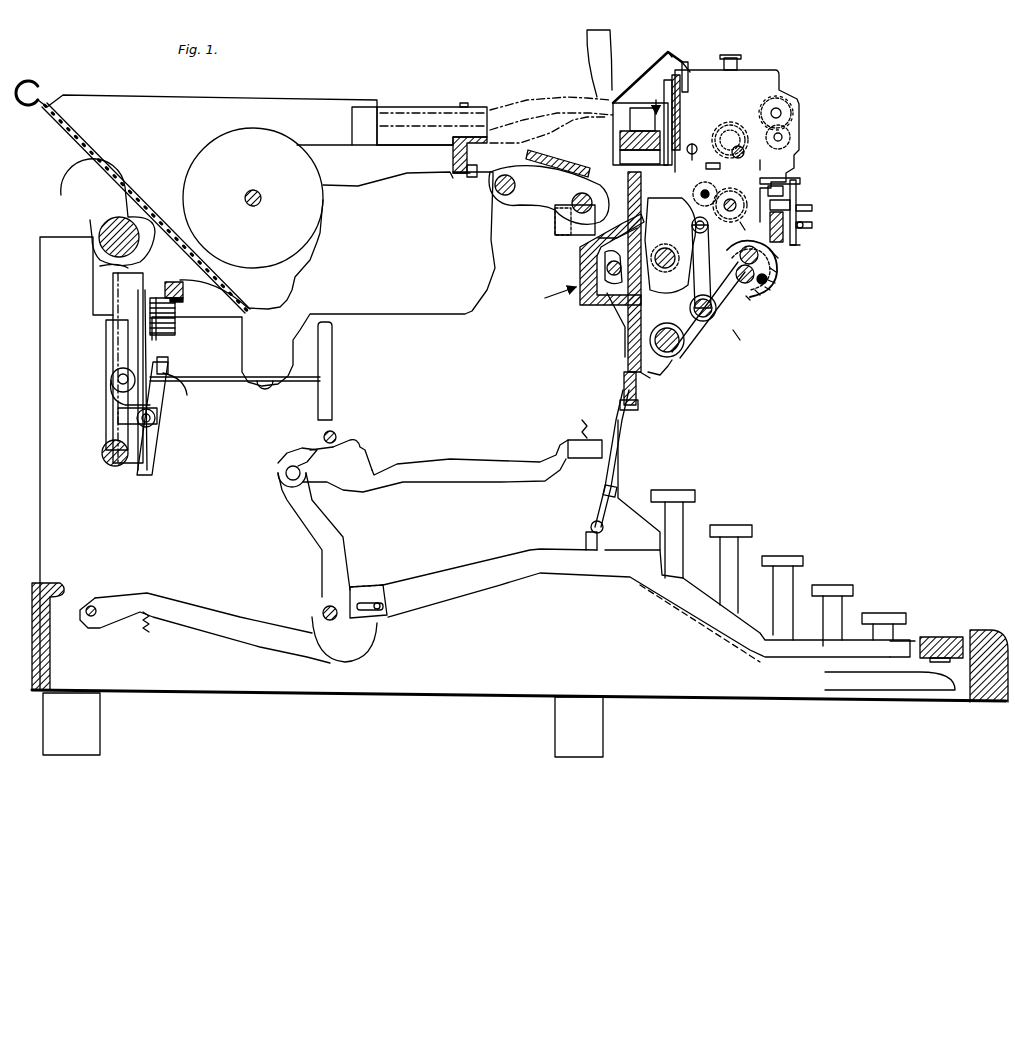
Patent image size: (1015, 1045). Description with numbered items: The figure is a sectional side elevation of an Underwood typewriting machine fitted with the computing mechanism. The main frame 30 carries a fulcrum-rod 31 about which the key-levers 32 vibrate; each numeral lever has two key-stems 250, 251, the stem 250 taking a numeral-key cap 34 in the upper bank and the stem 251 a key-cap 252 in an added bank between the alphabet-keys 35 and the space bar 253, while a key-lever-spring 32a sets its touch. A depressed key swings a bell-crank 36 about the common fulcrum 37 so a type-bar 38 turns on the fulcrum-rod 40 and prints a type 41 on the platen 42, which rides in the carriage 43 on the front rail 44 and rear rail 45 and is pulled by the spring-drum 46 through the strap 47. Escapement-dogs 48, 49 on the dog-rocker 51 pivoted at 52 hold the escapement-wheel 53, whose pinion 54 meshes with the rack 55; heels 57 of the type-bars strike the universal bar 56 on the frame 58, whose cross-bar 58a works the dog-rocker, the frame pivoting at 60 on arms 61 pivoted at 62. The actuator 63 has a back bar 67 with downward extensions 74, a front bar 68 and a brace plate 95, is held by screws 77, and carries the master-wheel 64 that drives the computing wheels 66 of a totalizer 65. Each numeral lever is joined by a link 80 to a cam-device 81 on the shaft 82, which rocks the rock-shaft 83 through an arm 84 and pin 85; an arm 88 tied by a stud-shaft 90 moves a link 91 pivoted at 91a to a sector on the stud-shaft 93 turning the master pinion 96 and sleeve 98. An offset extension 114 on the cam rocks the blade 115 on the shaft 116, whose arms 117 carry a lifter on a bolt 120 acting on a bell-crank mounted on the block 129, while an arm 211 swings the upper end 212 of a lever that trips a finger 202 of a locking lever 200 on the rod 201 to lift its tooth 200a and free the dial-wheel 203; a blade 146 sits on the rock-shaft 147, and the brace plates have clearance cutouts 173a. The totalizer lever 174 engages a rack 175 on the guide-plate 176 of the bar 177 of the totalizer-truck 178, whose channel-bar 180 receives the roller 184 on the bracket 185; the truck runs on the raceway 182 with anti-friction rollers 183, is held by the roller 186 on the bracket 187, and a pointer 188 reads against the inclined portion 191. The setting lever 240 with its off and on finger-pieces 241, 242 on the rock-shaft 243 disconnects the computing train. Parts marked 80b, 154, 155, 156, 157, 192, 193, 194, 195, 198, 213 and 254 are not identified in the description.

The main frame 30 is at (620, 481).
The fulcrum-rod 31 is at (90, 605).
The key-levers 32 is at (636, 605).
The key-lever-spring 32a is at (146, 633).
The numeral-keys 34 is at (683, 490).
The alphabet-keys 35 is at (770, 555).
The bell-cranks 36 is at (348, 546).
The common fulcrum 37 is at (322, 613).
The type-bars 38 is at (457, 459).
The common fulcrum-rod 40 is at (324, 437).
The types 41 is at (583, 424).
The platen 42 is at (253, 198).
The carriage 43 is at (318, 152).
The front rail 44 is at (497, 190).
The rear rail 45 is at (118, 220).
The spring-drum 46 is at (113, 332).
The strap 47 is at (112, 270).
The escapement-dog 48 is at (123, 372).
The escapement-dog 49 is at (169, 364).
The dog-rocker 51 is at (155, 441).
The pivot 52 is at (156, 418).
The escapement-wheel 53 is at (172, 283).
The pinion 54 is at (176, 329).
The rack 55 is at (183, 301).
The universal bar 56 is at (333, 386).
The heels 57 is at (352, 427).
The frame 58 is at (265, 375).
The cross-bar 58a is at (188, 394).
The pivot 60 is at (112, 385).
The arms 61 is at (106, 431).
The pivot 62 is at (103, 456).
The actuator 63 is at (755, 300).
The master-wheel 64 is at (742, 226).
The totalizer 65 is at (790, 70).
The computing wheels 66 is at (790, 158).
The back bar 67 is at (552, 292).
The front bar 68 is at (778, 256).
The downward extensions 74 is at (636, 392).
The screws 77 is at (652, 379).
The link 80 is at (625, 418).
The pin 80b is at (591, 527).
The actuating cam-device 81 is at (603, 298).
The shaft 82 is at (606, 268).
The rock-shaft 83 is at (670, 376).
The arm 84 is at (690, 344).
The pin 85 is at (705, 338).
The arm 88 is at (676, 353).
The stud-shaft 90 is at (708, 320).
The link 91 is at (707, 314).
The pivotal connection 91a is at (695, 223).
The stud-shaft 93 is at (664, 250).
The bracket plate 95 is at (627, 339).
The master pinion 96 is at (746, 210).
The sleeve 98 is at (712, 194).
The offset extension 114 is at (709, 270).
The universal blade 115 is at (749, 300).
The shaft 116 is at (763, 286).
The arms 117 is at (757, 292).
The bolt 120 is at (771, 290).
The block 129 is at (785, 243).
The blade 146 is at (756, 264).
The rock-shaft 147 is at (777, 271).
The frame 154 is at (582, 247).
The bar 155 is at (579, 172).
The member 156 is at (618, 266).
The pawl 157 is at (644, 230).
The clearance cutouts 173a is at (738, 342).
The lever 174 is at (741, 60).
The rack 175 is at (686, 90).
The guide-plate 176 is at (676, 74).
The horizontal bar 177 is at (645, 101).
The totalizer-truck 178 is at (664, 98).
The channel-bar 180 is at (800, 182).
The raceway 182 is at (620, 155).
The anti-friction rollers 183 is at (692, 144).
The roller 184 is at (796, 192).
The bracket 185 is at (796, 202).
The roller 186 is at (615, 102).
The bracket 187 is at (618, 140).
The pointer 188 is at (670, 52).
The inclined portion 191 is at (690, 72).
The pipe 192 is at (522, 143).
The bracket 193 is at (471, 177).
The plate 194 is at (455, 176).
The bracket 195 is at (453, 153).
The bar 198 is at (640, 99).
The locking levers 200 is at (731, 134).
The locking tooth 200a is at (740, 138).
The rod 201 is at (698, 143).
The fingers 202 is at (750, 143).
The dial-wheel 203 is at (800, 118).
The arm 211 is at (776, 282).
The upper end 212 is at (691, 168).
The member 213 is at (720, 166).
The setting lever 240 is at (800, 246).
The off finger-piece 241 is at (812, 208).
The on finger-piece 242 is at (812, 228).
The rock-shaft 243 is at (804, 226).
The key-stem 250 is at (663, 536).
The key-stem 251 is at (890, 641).
The key-cap 252 is at (883, 612).
The space bar 253 is at (940, 636).
The bracket 254 is at (805, 658).